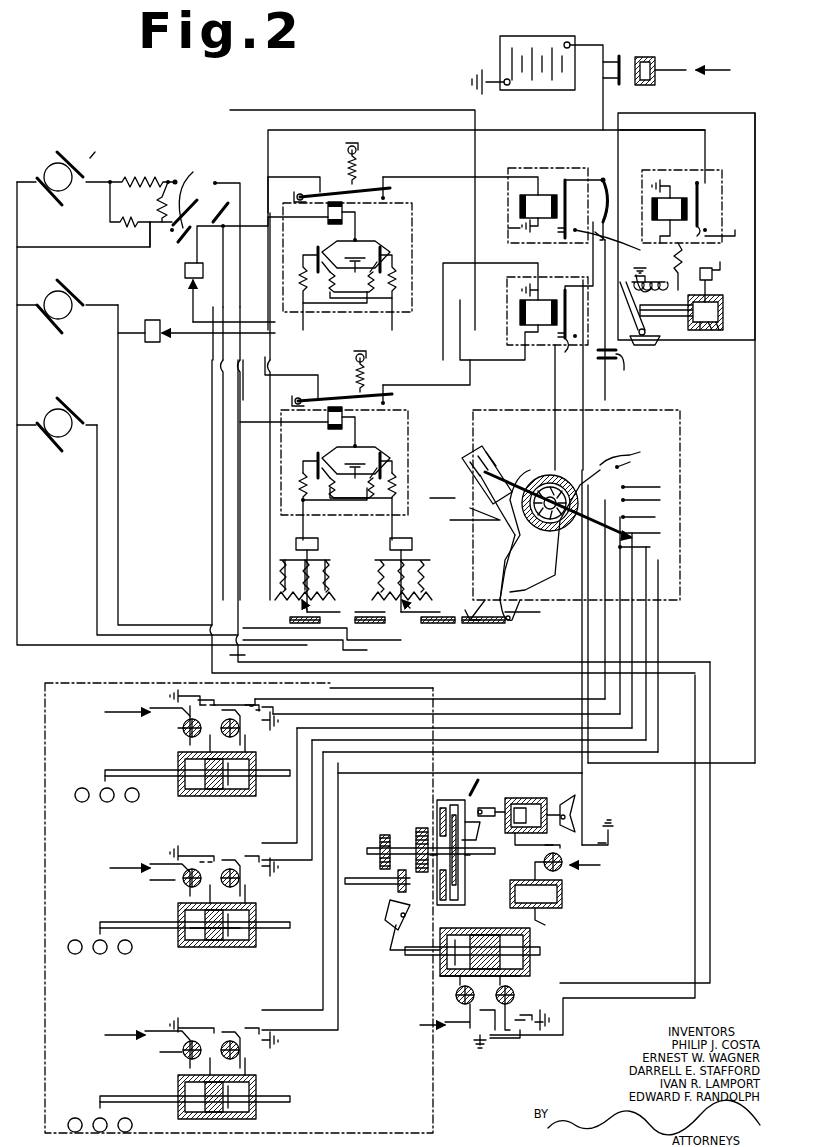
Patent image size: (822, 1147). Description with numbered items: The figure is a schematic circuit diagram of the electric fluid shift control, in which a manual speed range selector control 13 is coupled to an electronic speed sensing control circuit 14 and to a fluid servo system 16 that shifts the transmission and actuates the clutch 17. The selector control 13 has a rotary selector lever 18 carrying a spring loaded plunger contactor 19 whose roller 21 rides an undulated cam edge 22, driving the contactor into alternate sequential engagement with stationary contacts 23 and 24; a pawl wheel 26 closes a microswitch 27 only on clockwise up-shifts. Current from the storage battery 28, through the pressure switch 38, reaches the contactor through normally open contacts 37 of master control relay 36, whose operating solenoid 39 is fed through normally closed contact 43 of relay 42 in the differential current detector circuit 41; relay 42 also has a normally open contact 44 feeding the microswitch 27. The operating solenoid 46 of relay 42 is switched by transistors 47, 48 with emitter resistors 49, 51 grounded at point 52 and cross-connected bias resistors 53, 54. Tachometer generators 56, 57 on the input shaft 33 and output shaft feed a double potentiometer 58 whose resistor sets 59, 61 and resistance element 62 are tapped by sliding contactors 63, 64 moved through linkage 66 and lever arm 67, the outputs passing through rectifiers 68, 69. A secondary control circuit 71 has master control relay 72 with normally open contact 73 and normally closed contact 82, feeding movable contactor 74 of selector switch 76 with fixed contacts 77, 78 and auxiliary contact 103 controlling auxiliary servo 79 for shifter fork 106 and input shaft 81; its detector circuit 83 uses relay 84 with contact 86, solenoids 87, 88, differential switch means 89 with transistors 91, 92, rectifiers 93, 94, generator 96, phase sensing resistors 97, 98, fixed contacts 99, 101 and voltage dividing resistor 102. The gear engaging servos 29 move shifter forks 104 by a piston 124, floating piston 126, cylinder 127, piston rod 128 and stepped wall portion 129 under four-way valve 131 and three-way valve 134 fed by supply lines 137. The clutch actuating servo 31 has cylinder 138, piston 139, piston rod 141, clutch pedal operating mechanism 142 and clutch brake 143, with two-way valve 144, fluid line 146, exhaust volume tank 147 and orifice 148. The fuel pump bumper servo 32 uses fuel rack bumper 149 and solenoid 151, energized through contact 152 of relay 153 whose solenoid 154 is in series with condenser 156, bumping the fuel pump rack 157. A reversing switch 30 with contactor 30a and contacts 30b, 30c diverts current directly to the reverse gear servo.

The manual speed range selector control 13 is at (683, 440).
The electronic speed sensing control circuit 14 is at (262, 450).
The electromagnetically actuated fluid servo system 16 is at (120, 683).
The clutch 17 is at (458, 805).
The rotary operating selector lever 18 is at (556, 484).
The spring loaded plunger contactor 19 is at (630, 517).
The roller 21 is at (635, 533).
The arcuately undulated cam edge 22 is at (618, 458).
The stationary contacts 23 is at (634, 500).
The stationary contacts 24 is at (625, 468).
The pawl wheel 26 is at (560, 480).
The microswitch 27 is at (520, 483).
The storage battery 28 is at (536, 40).
The gear engaging servos 29 is at (225, 796).
The reversing switch 30 is at (628, 170).
The selector contactor 30a is at (604, 195).
The fixed contact 30b is at (600, 210).
The fixed contact 30c is at (618, 232).
The clutch actuating servo 31 is at (580, 805).
The fuel pump bumper actuating servo 32 is at (726, 246).
The input shaft 33 is at (383, 882).
The master control relay 36 is at (505, 296).
The normally open contacts 37 is at (568, 345).
The pressure switch 38 is at (645, 56).
The operating solenoid 39 is at (518, 324).
The differential current detector circuit 41 is at (283, 505).
The relay 42 is at (333, 390).
The normally closed contact 43 is at (392, 392).
The normally open contact 44 is at (392, 394).
The operating solenoid 46 is at (342, 418).
The transistor 47 is at (318, 458).
The transistor 48 is at (384, 460).
The emitter resistor 49 is at (345, 472).
The emitter resistor 51 is at (368, 476).
The ground point 52 is at (360, 462).
The bias resistor 53 is at (392, 494).
The bias resistor 54 is at (300, 485).
The tachometer generator 56 is at (60, 310).
The tachometer generator 57 is at (45, 415).
The double potentiometer 58 is at (410, 626).
The paralleled resistors 59 is at (278, 575).
The paralleled resistors 61 is at (380, 578).
The resistance element 62 is at (345, 600).
The sliding contactor 63 is at (300, 608).
The sliding contactor 64 is at (410, 606).
The linkage 66 is at (475, 620).
The lever arm 67 is at (525, 610).
The rectifier 68 is at (318, 545).
The rectifier 69 is at (397, 538).
The secondary control circuit 71 is at (192, 118).
The master control relay 72 is at (560, 170).
The normally open contact 73 is at (608, 236).
The movable contactor 74 is at (182, 200).
The auxiliary transmission speed range selector switch 76 is at (195, 170).
The fixed contact 77 is at (220, 182).
The fixed contact 78 is at (228, 218).
The auxiliary transmission operating servo 79 is at (540, 972).
The input shaft 81 is at (430, 850).
The normally closed contact 82 is at (540, 232).
The differential current detector circuit 83 is at (420, 230).
The relay 84 is at (368, 185).
The normally closed contact 86 is at (390, 188).
The operating solenoid 87 is at (518, 200).
The operating solenoid 88 is at (342, 212).
The differential current switch means 89 is at (392, 236).
The transistor 91 is at (318, 252).
The transistor 92 is at (372, 262).
The rectifier 93 is at (183, 279).
The rectifier 94 is at (158, 320).
The tachometer generator 96 is at (48, 170).
The phase sensing resistor 97 is at (140, 180).
The phase sensing resistor 98 is at (115, 230).
The fixed contact 99 is at (178, 180).
The fixed contact 101 is at (170, 231).
The voltage dividing resistor 102 is at (162, 196).
The auxiliary contact 103 is at (221, 232).
The shifter fork 104 is at (95, 770).
The overdrive shifter fork 106 is at (393, 933).
The piston 124 is at (222, 947).
The floating piston 126 is at (190, 896).
The cylinder 127 is at (182, 940).
The piston rod 128 is at (165, 770).
The inwardly stepped wall portion 129 is at (250, 912).
The four-way solenoid valve 131 is at (240, 735).
The three-way solenoid valve 134 is at (183, 730).
The pressurized hydraulic fluid supply lines 137 is at (165, 708).
The fixed cylinder 138 is at (555, 795).
The piston 139 is at (528, 798).
The piston rod 141 is at (505, 812).
The clutch pedal operating mechanism 142 is at (478, 800).
The clutch brake 143 is at (440, 815).
The two-way solenoid operated valve 144 is at (562, 866).
The pressurized fluid line 146 is at (585, 868).
The exhaust volume tank 147 is at (550, 920).
The orifice 148 is at (562, 893).
The fuel rack bumper 149 is at (660, 325).
The solenoid 151 is at (636, 290).
The normally open contact 152 is at (697, 228).
The relay 153 is at (705, 173).
The operating solenoid 154 is at (665, 198).
The condenser 156 is at (624, 372).
The fuel pump rack 157 is at (725, 342).